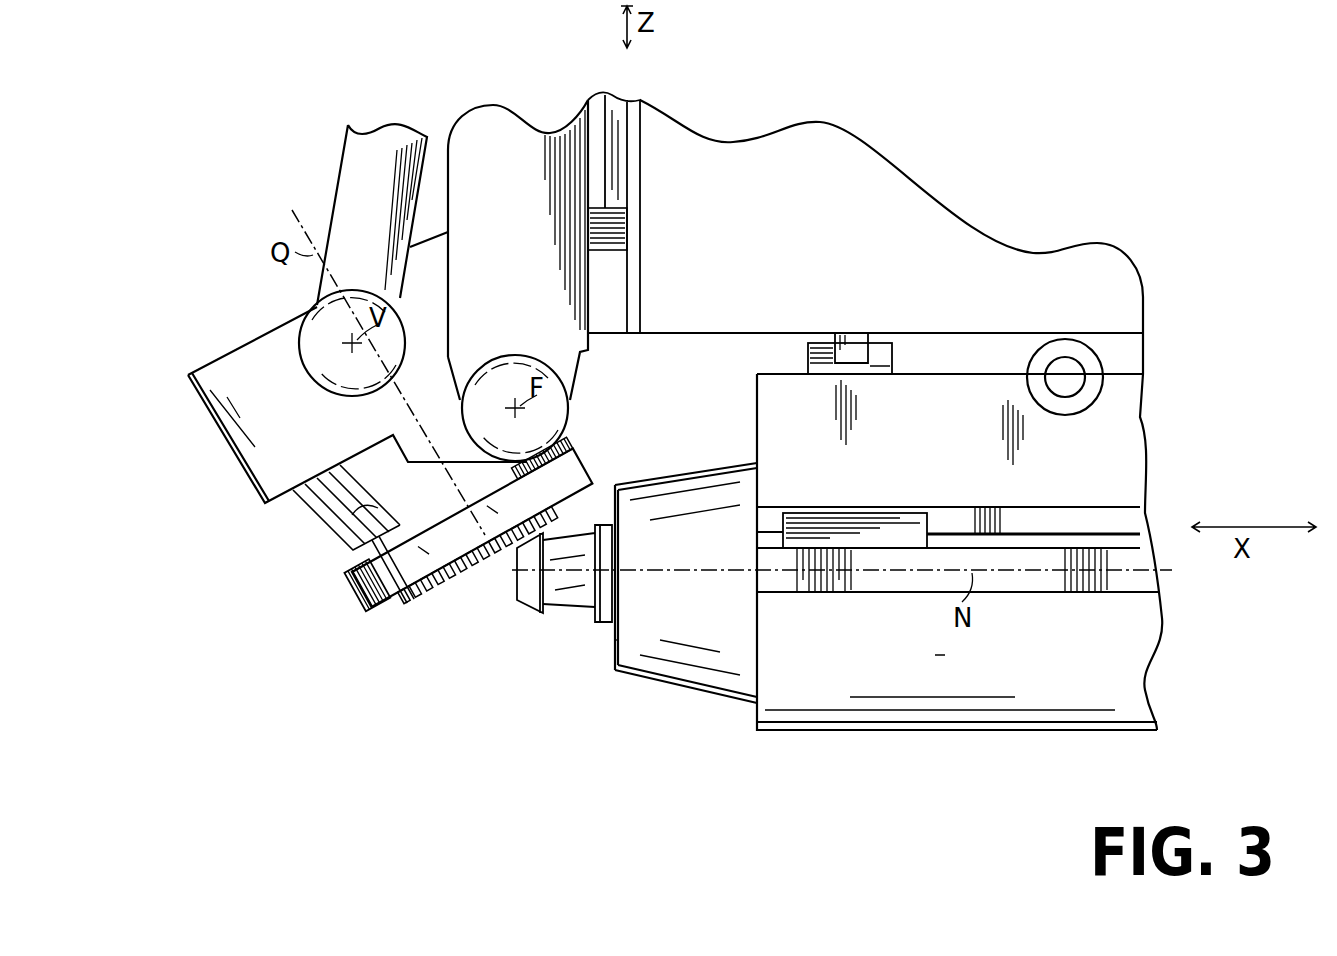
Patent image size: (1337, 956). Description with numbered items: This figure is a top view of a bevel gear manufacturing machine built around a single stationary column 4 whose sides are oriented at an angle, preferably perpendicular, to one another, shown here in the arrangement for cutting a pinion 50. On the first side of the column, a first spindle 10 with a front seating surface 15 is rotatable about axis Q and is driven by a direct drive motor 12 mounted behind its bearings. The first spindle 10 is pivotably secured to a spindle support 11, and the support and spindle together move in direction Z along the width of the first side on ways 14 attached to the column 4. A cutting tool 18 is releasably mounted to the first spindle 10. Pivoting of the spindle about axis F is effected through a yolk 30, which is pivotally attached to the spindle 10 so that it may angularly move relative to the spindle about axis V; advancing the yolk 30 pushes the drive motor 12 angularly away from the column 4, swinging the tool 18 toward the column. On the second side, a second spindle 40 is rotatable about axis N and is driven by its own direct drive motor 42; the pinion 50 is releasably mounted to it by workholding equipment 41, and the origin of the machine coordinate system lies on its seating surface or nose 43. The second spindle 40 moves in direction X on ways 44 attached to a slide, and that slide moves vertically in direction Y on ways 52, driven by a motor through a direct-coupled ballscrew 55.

The stationary column 4 is at (813, 209).
The first spindle 10 is at (360, 508).
The spindle support 11 is at (482, 152).
The direct drive motor 12 is at (245, 368).
The ways 14 is at (612, 112).
The seating surface 15 is at (405, 533).
The cutting tool 18 is at (360, 590).
The yolk 30 is at (358, 152).
The second spindle 40 is at (712, 652).
The workholding equipment 41 is at (555, 583).
The direct drive motor 42 is at (832, 688).
The nose 43 is at (615, 642).
The ways 44 is at (1110, 518).
The pinion 50 is at (530, 600).
The ways 52 is at (882, 352).
The ballscrew 55 is at (1067, 362).